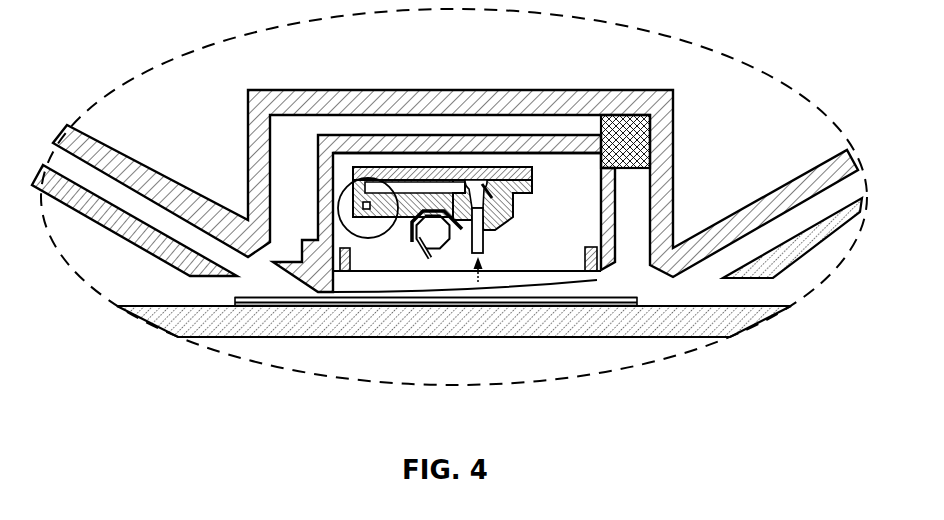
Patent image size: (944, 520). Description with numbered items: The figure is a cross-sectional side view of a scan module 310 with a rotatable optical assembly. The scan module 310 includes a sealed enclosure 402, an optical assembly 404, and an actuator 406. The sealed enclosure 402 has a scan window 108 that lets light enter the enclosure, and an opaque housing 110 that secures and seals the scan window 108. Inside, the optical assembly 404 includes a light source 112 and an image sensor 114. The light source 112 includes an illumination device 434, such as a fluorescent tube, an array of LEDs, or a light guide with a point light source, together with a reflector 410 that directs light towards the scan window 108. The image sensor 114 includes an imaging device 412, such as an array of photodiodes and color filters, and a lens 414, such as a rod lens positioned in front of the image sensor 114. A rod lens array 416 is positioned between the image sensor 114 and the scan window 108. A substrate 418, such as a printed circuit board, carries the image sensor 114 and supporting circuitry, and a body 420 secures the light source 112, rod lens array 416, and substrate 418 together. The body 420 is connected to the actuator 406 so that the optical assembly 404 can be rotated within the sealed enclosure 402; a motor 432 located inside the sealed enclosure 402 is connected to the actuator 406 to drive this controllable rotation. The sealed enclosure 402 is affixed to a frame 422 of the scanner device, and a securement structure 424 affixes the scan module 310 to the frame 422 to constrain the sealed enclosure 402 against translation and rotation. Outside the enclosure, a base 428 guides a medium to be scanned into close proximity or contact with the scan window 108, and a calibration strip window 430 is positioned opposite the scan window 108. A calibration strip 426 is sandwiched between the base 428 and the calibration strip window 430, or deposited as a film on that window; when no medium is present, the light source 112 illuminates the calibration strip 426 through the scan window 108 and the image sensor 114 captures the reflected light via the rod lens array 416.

The scan window 108 is at (357, 283).
The opaque housing 110 is at (405, 142).
The light source 112 is at (402, 242).
The image sensor 114 is at (489, 174).
The scan module 310 is at (301, 142).
The sealed enclosure 402 is at (313, 173).
The optical assembly 404 is at (464, 162).
The actuator 406 is at (354, 207).
The reflector 410 is at (428, 254).
The imaging device 412 is at (515, 201).
The lens 414 is at (514, 207).
The rod lens array 416 is at (488, 248).
The substrate 418 is at (533, 175).
The body 420 is at (533, 187).
The frame 422 is at (287, 97).
The securement structure 424 is at (613, 115).
The calibration strip 426 is at (457, 306).
The base 428 is at (173, 306).
The calibration strip window 430 is at (598, 297).
The motor 432 is at (352, 178).
The illumination device 434 is at (418, 242).